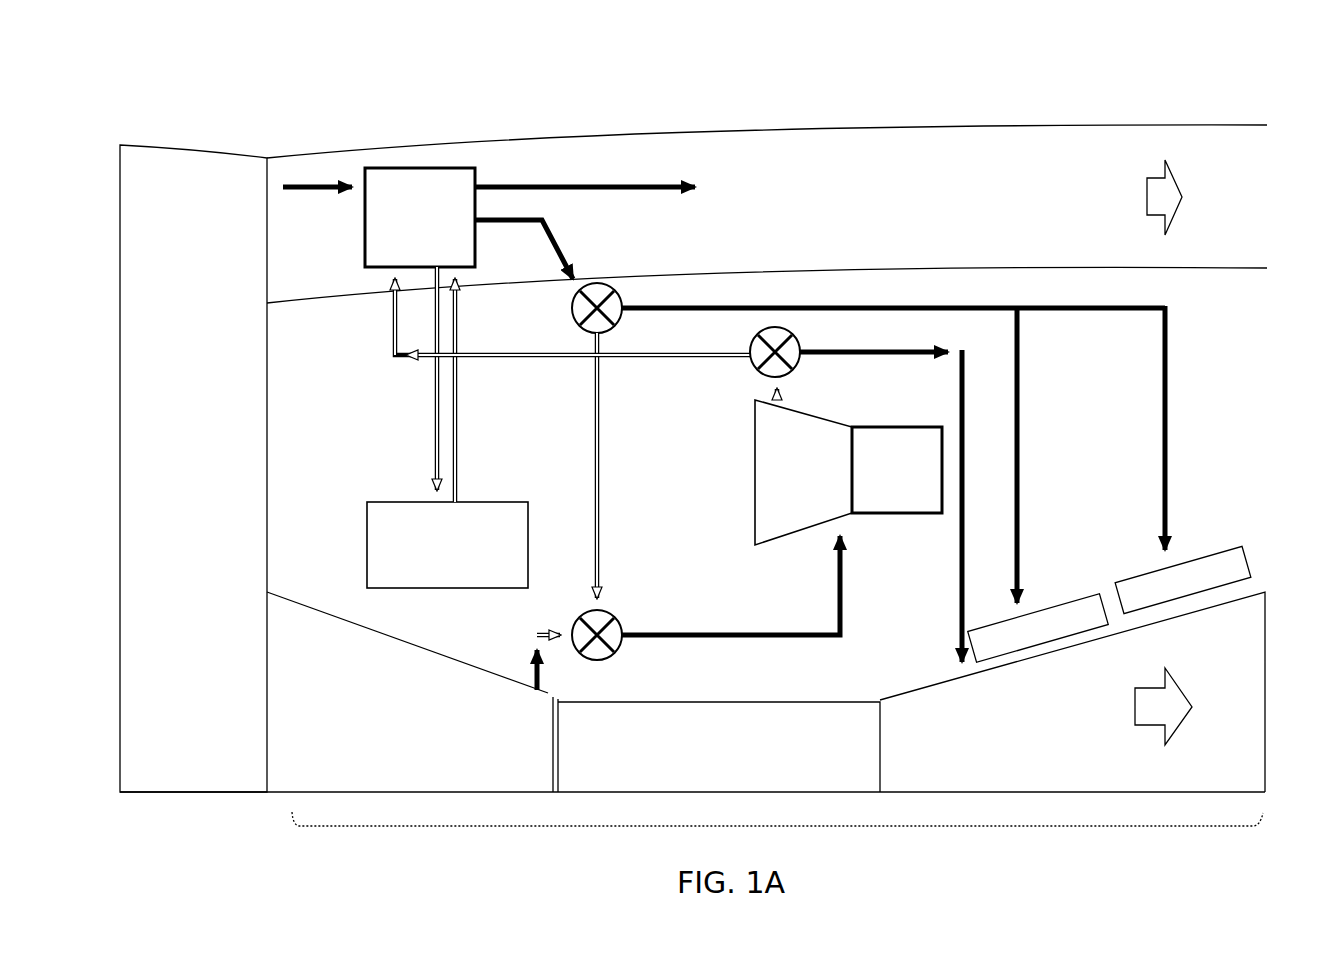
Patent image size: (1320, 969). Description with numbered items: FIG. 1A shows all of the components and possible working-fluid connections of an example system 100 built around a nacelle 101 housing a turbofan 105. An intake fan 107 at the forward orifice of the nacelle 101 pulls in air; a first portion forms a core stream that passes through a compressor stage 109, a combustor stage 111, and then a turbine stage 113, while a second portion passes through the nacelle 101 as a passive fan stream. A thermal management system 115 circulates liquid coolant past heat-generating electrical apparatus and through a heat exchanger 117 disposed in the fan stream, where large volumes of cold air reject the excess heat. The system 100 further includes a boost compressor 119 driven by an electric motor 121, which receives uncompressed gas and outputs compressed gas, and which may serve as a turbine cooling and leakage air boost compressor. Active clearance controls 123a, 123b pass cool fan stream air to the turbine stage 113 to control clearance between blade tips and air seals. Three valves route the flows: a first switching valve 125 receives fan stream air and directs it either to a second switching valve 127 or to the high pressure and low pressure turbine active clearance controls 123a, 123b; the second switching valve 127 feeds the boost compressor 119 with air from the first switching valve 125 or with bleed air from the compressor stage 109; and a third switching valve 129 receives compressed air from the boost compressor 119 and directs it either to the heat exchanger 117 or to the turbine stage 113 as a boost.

The system 100 is at (363, 85).
The nacelle 101 is at (464, 133).
The turbofan 105 is at (963, 825).
The intake fan 107 is at (161, 175).
The compressor stage 109 is at (310, 633).
The combustor stage 111 is at (807, 721).
The turbine stage 113 is at (1050, 763).
The thermal management system 115 is at (381, 532).
The heat exchanger 117 is at (386, 229).
The boost compressor 119 is at (805, 533).
The electric motor 121 is at (876, 517).
The high pressure turbine active clearance control 123a is at (1037, 598).
The low pressure turbine active clearance control 123b is at (1177, 543).
The first switching valve 125 is at (565, 320).
The second switching valve 127 is at (622, 648).
The third switching valve 129 is at (797, 334).